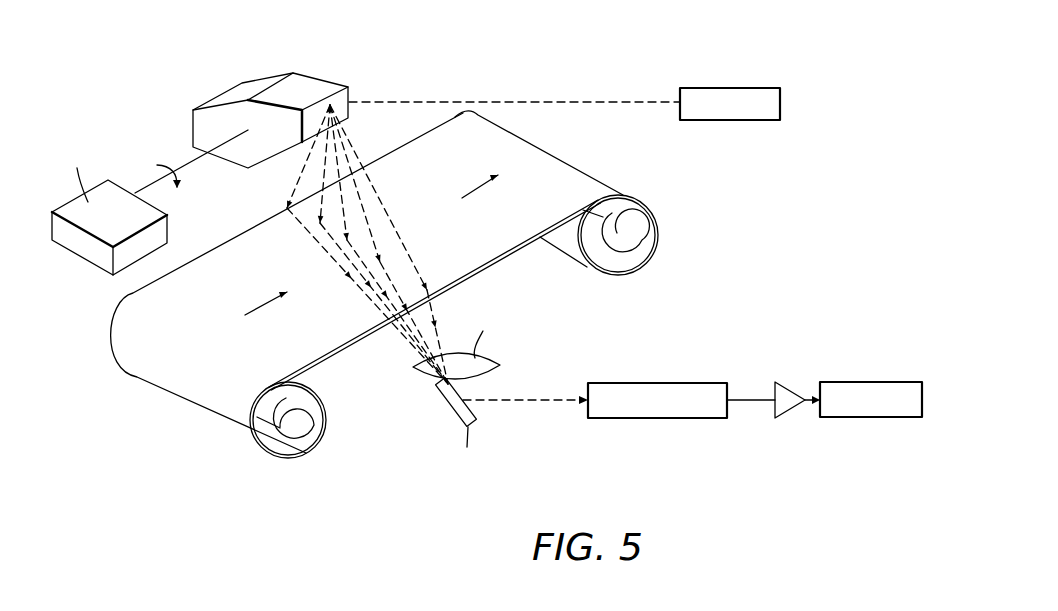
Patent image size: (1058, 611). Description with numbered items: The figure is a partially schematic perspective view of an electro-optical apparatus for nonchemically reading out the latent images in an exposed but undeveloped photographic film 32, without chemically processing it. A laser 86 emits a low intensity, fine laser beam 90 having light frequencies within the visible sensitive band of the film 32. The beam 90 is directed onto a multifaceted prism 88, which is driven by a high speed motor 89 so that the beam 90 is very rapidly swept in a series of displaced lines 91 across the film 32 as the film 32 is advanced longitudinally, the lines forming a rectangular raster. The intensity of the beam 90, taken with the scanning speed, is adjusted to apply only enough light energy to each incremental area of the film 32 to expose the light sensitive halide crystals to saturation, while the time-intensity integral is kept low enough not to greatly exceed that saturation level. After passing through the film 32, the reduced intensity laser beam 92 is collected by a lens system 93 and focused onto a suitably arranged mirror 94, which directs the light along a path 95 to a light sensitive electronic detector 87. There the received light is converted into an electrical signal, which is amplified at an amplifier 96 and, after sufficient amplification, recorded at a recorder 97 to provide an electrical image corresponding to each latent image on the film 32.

The film 32 is at (157, 393).
The laser 86 is at (733, 88).
The detector 87 is at (685, 388).
The multifaceted prism 88 is at (302, 86).
The high speed motor 89 is at (167, 217).
The laser beam 90 is at (560, 102).
The displaced lines 91 is at (400, 277).
The reduced intensity laser beam 92 is at (435, 312).
The lens system 93 is at (502, 365).
The mirror 94 is at (437, 386).
The beam to detector 95 is at (530, 403).
The amplifier 96 is at (793, 409).
The recorder 97 is at (862, 388).